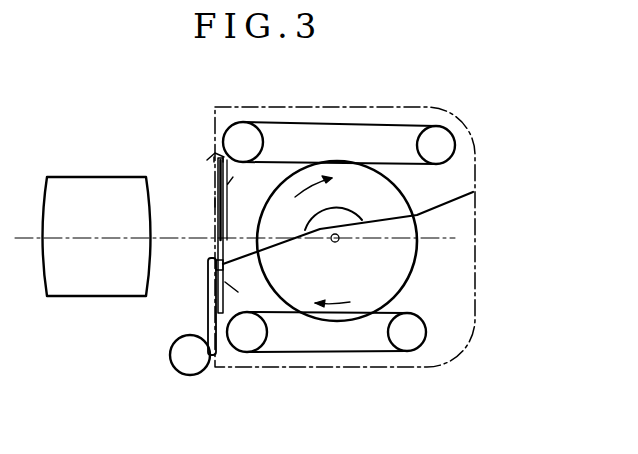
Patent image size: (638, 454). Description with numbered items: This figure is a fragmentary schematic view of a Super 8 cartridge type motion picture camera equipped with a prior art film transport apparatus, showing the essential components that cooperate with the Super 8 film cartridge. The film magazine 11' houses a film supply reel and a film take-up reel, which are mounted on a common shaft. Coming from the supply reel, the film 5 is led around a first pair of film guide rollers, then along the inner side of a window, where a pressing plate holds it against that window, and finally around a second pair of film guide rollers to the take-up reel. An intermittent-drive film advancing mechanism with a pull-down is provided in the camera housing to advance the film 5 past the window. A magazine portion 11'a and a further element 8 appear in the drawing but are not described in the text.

The guide plate top 5 is at (222, 150).
The supply roll 8 is at (92, 190).
The housing 11' is at (367, 237).
The housing inlet 11'a is at (190, 147).